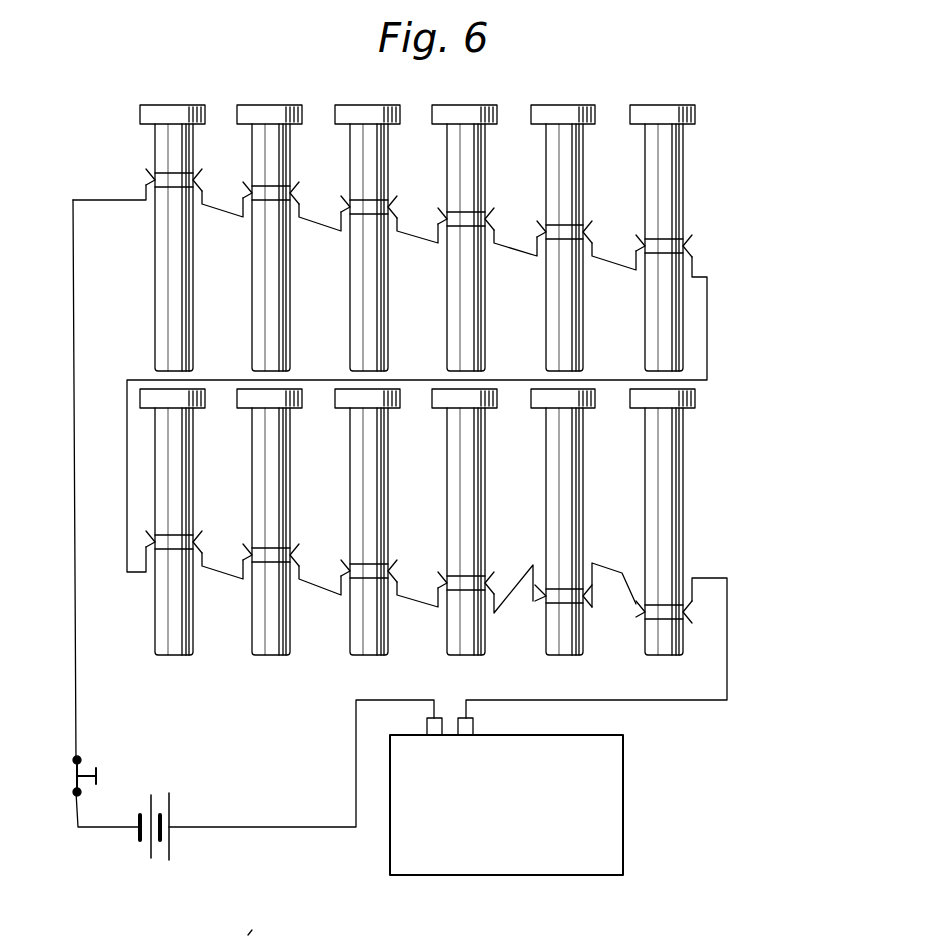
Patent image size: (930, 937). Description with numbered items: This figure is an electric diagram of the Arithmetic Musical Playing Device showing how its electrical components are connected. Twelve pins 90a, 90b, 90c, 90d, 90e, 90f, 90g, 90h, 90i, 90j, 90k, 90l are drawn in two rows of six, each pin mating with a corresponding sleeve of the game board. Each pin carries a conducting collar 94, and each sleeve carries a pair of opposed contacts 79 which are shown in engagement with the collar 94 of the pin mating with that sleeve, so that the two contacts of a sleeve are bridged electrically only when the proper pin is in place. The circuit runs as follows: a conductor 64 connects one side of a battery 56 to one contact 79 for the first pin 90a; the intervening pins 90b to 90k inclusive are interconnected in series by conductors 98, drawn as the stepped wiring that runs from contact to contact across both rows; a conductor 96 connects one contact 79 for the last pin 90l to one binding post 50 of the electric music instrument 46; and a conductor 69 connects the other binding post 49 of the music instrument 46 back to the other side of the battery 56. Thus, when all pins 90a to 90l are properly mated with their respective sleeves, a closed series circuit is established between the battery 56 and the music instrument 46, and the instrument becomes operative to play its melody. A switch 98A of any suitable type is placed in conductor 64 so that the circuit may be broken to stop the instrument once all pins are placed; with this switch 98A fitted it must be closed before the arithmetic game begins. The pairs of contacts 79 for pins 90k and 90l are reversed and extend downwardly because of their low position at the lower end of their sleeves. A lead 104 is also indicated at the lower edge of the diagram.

The music instrument 46 is at (508, 862).
The binding post 49 is at (427, 727).
The binding post 50 is at (476, 722).
The battery 56 is at (152, 858).
The conductor 64 is at (78, 722).
The conductor 69 is at (237, 827).
The contact 79 is at (146, 178).
The pin 90a is at (165, 303).
The pin 90b is at (262, 303).
The pin 90c is at (352, 303).
The pin 90d is at (452, 315).
The pin 90e is at (552, 328).
The pin 90f is at (652, 328).
The pin 90g is at (182, 470).
The pin 90h is at (282, 485).
The pin 90i is at (372, 497).
The pin 90j is at (460, 507).
The pin 90k is at (567, 512).
The pin 90l is at (672, 495).
The conducting collar 94 is at (165, 185).
The conductor 96 is at (672, 700).
The conductor 98 is at (228, 210).
The switch 98A is at (78, 776).
The lead 104 is at (258, 936).